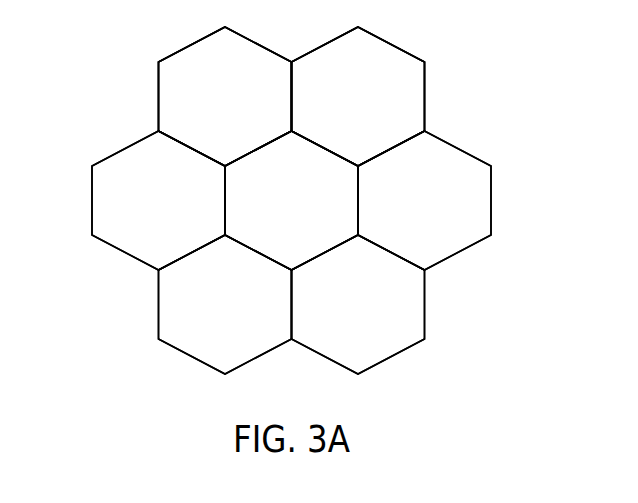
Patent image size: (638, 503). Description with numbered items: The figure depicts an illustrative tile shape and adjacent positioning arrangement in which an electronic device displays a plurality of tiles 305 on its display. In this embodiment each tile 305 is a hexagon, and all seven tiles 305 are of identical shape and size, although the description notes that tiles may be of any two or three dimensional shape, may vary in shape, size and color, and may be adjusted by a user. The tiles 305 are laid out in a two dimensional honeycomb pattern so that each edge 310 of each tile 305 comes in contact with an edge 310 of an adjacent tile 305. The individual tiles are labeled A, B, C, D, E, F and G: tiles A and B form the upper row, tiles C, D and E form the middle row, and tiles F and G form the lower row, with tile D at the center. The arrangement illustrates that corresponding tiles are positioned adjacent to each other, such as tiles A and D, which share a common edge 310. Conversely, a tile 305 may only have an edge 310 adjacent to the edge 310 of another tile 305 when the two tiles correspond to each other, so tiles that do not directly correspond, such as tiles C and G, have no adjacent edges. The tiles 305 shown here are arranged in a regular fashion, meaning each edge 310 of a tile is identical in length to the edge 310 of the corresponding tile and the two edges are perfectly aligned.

The tile 305 is at (290, 190).
The edge 310 is at (285, 89).
The tile A is at (225, 96).
The tile B is at (358, 96).
The tile C is at (158, 200).
The tile D is at (291, 200).
The tile E is at (424, 200).
The tile F is at (225, 304).
The tile G is at (358, 304).